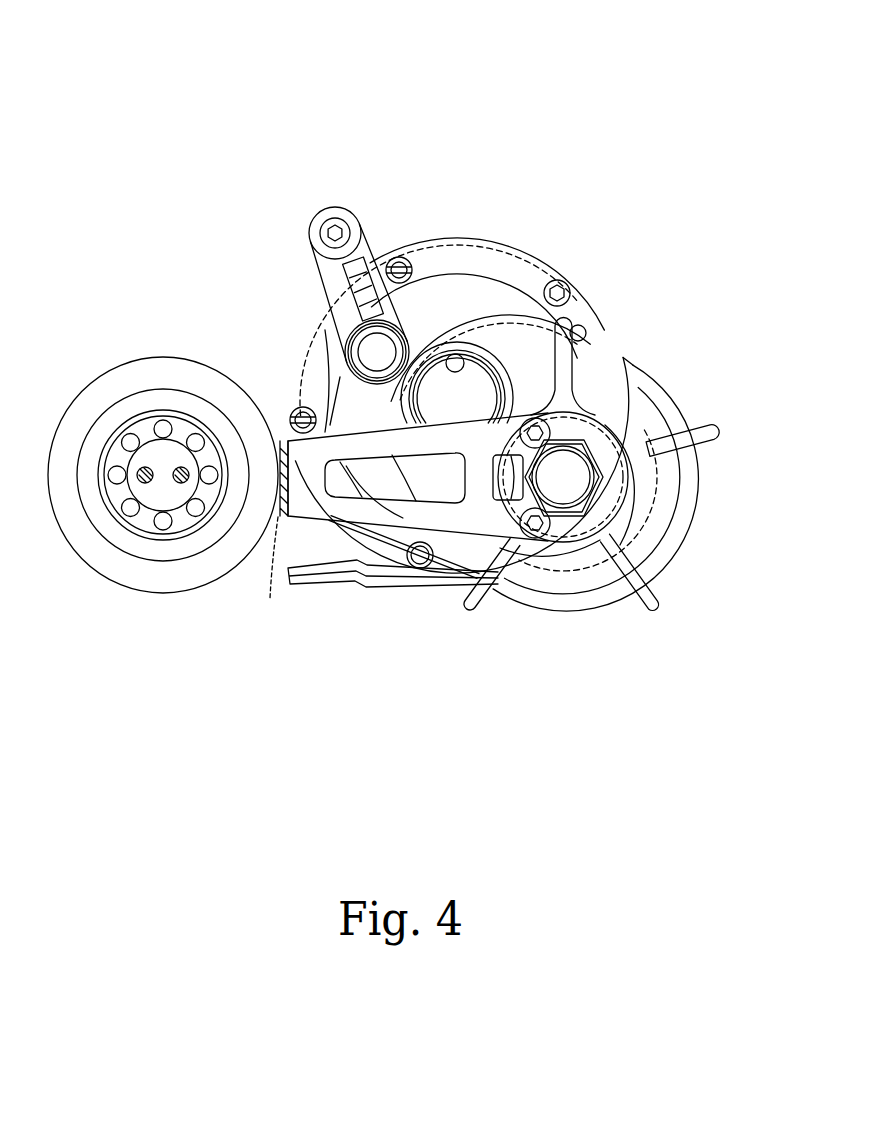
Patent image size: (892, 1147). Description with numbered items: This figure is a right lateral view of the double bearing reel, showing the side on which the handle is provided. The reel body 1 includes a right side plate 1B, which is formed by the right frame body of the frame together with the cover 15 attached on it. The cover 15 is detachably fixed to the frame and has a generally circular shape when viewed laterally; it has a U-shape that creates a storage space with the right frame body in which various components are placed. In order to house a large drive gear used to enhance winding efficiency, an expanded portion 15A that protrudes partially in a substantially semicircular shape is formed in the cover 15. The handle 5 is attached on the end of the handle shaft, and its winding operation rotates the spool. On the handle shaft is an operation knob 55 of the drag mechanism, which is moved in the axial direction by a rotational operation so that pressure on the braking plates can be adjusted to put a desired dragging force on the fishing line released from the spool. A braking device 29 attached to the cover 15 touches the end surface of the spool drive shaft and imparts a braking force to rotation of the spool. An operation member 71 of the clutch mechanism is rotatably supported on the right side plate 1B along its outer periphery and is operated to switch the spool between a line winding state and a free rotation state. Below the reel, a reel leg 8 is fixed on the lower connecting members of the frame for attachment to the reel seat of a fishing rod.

The reel body 1 is at (534, 97).
The right side plate 1B is at (462, 229).
The cover 15 is at (500, 313).
The expanded portion 15A is at (668, 503).
The braking device 29 is at (438, 379).
The handle 5 is at (283, 540).
The reel leg 8 is at (385, 580).
The operation knob 55 is at (588, 552).
The operation member 71 is at (341, 206).